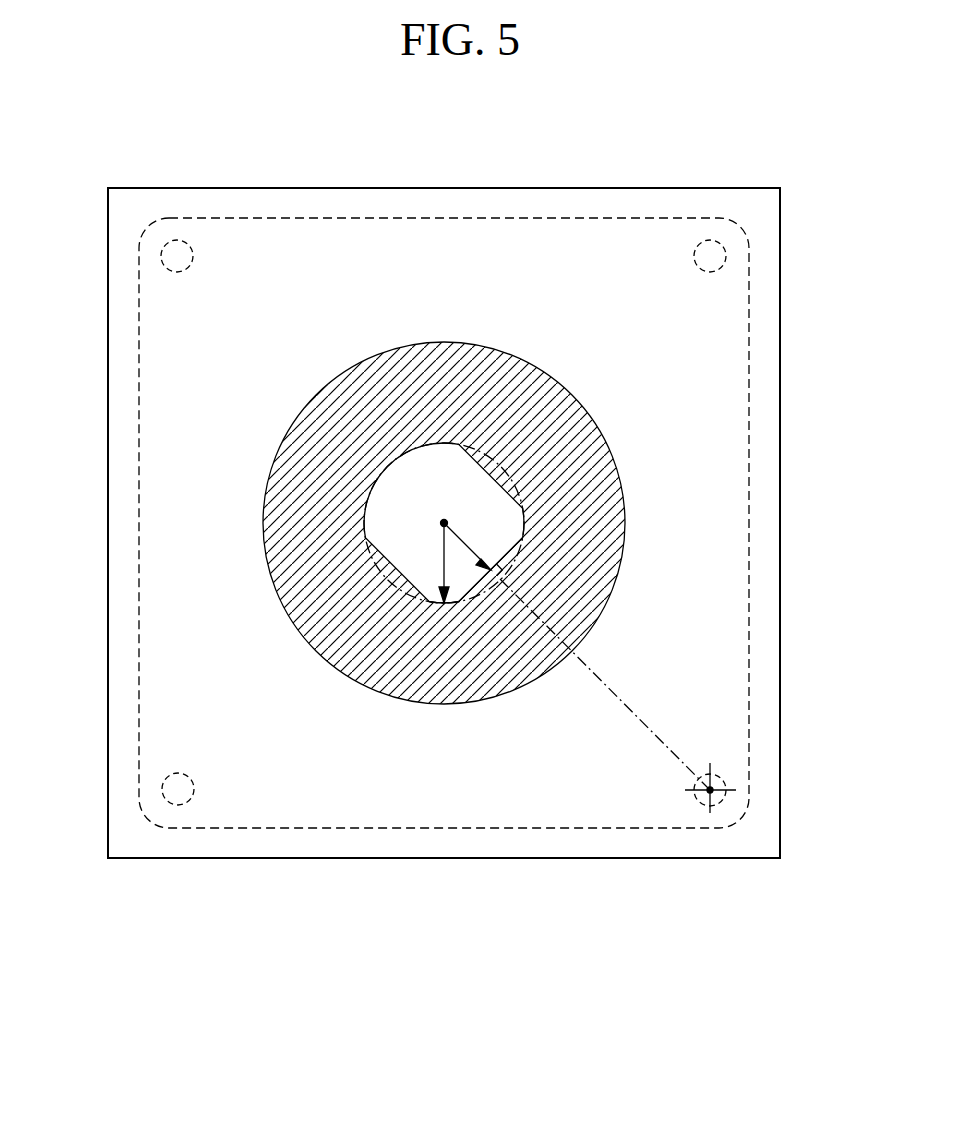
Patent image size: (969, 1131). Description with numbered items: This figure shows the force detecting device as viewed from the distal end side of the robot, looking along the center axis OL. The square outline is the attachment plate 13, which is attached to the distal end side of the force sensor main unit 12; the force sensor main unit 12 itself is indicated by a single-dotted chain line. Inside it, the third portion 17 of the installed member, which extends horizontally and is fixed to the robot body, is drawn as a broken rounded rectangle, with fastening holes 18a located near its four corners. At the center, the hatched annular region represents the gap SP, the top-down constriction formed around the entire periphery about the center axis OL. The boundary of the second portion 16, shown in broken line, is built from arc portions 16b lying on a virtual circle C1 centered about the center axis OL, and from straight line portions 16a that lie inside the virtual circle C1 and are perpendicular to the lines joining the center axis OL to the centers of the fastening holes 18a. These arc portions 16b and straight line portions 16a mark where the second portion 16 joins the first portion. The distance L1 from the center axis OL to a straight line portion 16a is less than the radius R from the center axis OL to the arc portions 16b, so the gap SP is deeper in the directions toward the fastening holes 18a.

The force sensor main unit 12 is at (545, 418).
The attachment plate 13 is at (780, 535).
The second portion 16 is at (473, 700).
The straight line portions 16a is at (508, 590).
The arc portions 16b is at (428, 602).
The third portion 17 is at (712, 304).
The fastening holes 18a is at (196, 248).
The gap SP is at (355, 402).
The virtual circle C1 is at (393, 470).
The center axis OL is at (447, 511).
The distance (radius) R is at (438, 564).
The distance L1 is at (578, 656).